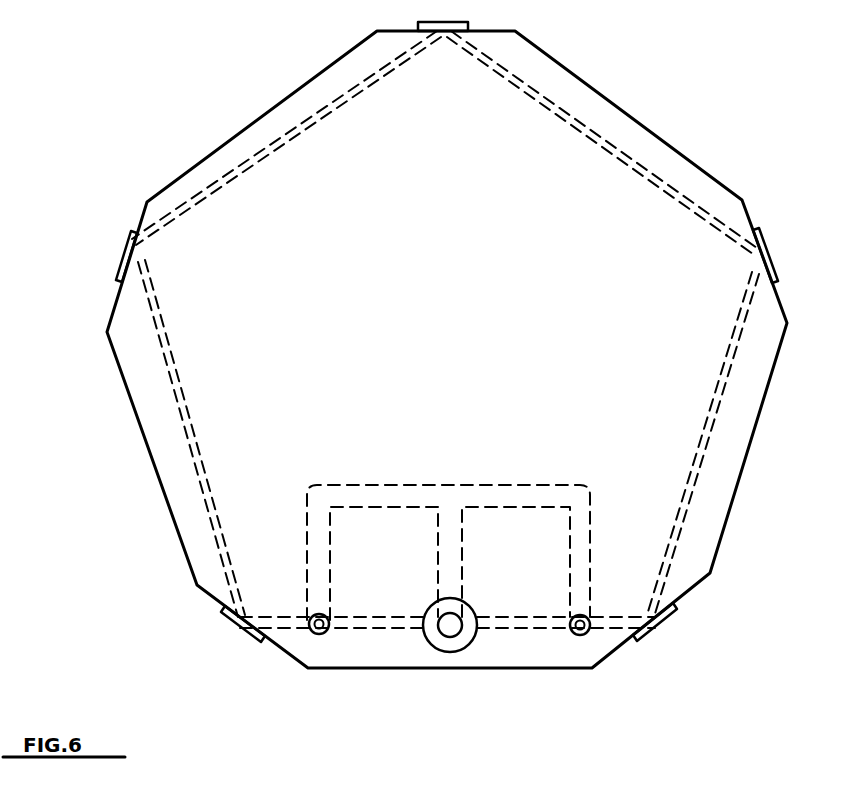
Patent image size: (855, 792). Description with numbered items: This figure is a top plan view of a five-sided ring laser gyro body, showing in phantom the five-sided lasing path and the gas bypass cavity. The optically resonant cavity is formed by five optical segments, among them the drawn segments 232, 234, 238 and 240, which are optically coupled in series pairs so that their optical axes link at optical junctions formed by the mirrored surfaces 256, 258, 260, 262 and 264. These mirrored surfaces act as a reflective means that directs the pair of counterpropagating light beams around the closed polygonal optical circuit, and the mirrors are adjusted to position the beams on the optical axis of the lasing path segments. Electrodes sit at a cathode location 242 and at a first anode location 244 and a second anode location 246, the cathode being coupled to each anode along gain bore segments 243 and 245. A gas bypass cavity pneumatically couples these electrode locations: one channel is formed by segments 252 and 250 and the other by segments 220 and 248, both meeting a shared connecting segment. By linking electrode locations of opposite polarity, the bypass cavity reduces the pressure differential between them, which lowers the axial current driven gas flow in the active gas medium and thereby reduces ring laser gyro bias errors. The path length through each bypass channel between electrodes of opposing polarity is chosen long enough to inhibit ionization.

The gas bypass cavity segment 220 is at (448, 536).
The optical path segment 232 is at (340, 107).
The optical path segment 234 is at (557, 115).
The optical path segment 238 is at (447, 640).
The optical path segment 240 is at (182, 407).
The cathode location 242 is at (450, 633).
The gain bore segment 243 is at (382, 623).
The anode 1 location 244 is at (322, 633).
The gain bore segment 245 is at (532, 623).
The anode 2 location 246 is at (575, 636).
The gas bypass cavity segment 248 is at (585, 555).
The gas bypass cavity segment 250 is at (367, 502).
The gas bypass cavity segment 252 is at (320, 538).
The mirrored surface 256 is at (135, 258).
The mirrored surface 258 is at (445, 33).
The mirrored surface 260 is at (753, 255).
The mirrored surface 262 is at (645, 612).
The mirrored surface 264 is at (257, 615).